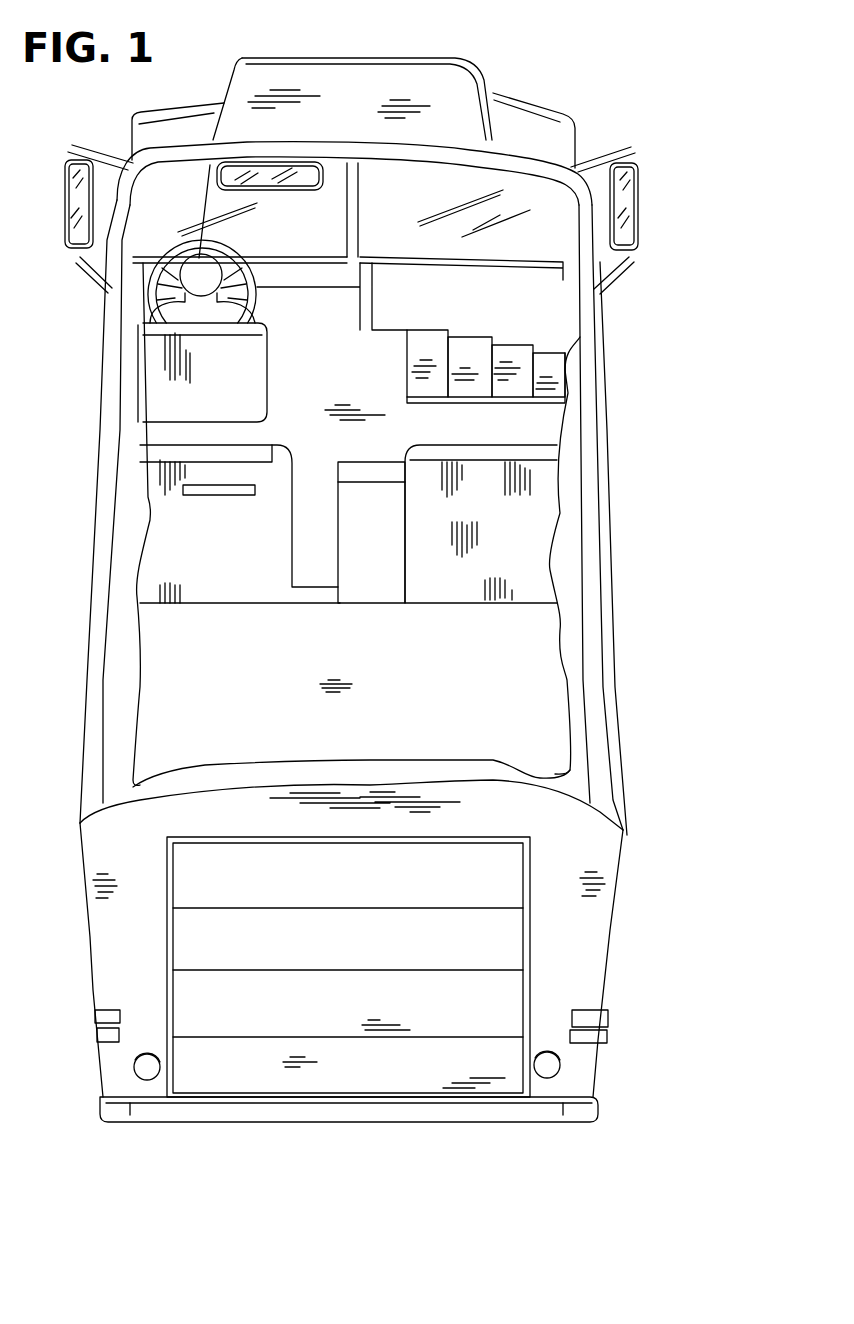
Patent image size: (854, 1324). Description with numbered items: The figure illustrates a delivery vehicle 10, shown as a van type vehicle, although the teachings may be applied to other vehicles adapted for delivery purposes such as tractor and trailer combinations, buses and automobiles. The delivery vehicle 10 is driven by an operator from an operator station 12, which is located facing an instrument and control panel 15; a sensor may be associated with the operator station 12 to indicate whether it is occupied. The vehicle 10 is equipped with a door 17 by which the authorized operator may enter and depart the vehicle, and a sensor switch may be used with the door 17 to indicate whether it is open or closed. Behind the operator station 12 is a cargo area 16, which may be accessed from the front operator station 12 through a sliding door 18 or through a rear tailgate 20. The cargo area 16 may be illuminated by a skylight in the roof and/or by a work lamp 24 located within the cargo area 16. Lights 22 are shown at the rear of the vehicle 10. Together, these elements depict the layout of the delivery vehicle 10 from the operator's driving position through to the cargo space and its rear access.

The delivery vehicle 10 is at (616, 357).
The operator station 12 is at (252, 302).
The instrument and control panel 15 is at (272, 280).
The cargo area 16 is at (430, 694).
The door 17 is at (590, 282).
The sliding door 18 is at (363, 545).
The rear tailgate 20 is at (370, 1060).
The lights 22 is at (143, 1073).
The work lamp 24 is at (213, 495).